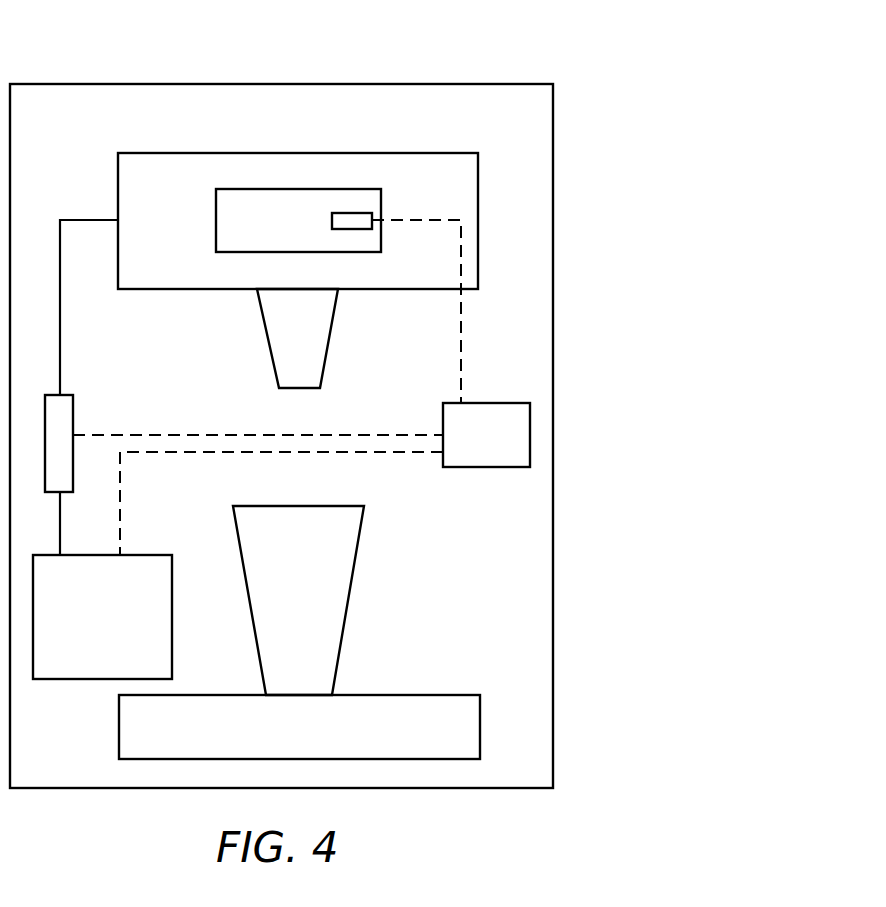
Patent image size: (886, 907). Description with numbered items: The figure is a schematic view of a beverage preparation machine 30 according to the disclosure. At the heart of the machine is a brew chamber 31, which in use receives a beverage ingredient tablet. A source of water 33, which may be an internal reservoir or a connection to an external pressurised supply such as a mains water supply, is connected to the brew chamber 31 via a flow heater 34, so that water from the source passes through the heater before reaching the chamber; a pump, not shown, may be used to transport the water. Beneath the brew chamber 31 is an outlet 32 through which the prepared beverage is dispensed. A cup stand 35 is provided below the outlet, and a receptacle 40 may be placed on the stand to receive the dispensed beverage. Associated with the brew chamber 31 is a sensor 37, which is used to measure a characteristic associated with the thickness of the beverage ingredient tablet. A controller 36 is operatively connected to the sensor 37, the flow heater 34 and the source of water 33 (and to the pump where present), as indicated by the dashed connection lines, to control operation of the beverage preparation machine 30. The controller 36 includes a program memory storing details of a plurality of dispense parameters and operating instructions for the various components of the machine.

The beverage preparation machine 30 is at (506, 64).
The brew chamber 31 is at (238, 198).
The sensor 37 is at (352, 218).
The outlet 32 is at (297, 338).
The flow heater 34 is at (73, 405).
The controller 36 is at (486, 435).
The source of water 33 is at (102, 617).
The receptacle 40 is at (298, 600).
The cup stand 35 is at (299, 727).